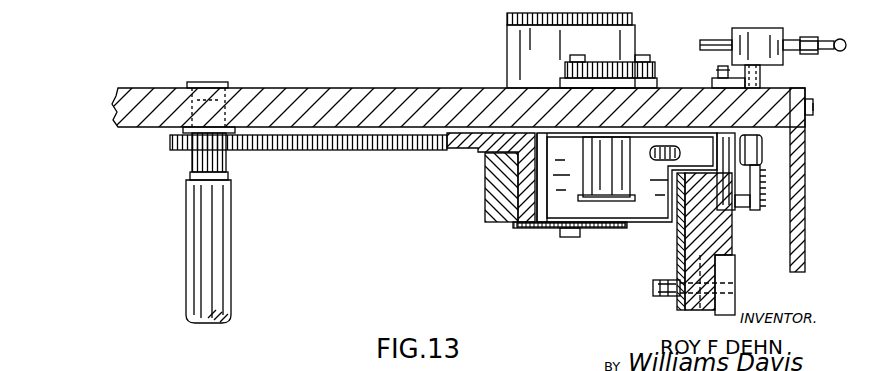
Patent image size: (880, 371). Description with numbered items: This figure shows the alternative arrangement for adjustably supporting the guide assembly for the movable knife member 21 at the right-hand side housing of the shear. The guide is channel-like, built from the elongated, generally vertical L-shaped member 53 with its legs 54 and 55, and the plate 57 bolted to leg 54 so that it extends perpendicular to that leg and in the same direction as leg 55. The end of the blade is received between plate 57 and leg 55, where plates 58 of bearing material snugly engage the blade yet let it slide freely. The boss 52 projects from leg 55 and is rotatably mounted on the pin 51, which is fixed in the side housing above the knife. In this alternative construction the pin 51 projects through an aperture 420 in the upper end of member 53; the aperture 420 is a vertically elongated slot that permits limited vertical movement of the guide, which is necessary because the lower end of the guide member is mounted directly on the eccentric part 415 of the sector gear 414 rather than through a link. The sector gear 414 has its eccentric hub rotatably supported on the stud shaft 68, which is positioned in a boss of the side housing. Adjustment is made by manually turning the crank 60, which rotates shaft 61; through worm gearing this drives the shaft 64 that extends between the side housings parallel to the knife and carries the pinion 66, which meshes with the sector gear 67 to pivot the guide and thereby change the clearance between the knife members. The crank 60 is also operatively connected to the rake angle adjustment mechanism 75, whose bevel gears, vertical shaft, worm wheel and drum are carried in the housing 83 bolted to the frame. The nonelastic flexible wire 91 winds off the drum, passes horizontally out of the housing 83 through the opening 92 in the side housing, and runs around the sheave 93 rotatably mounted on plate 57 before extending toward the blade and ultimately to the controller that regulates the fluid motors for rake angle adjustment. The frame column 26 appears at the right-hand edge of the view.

The movable knife member 21 is at (735, 268).
The frame column 26 is at (806, 216).
The pin 51 is at (598, 166).
The boss 52 is at (615, 185).
The L-shaped member 53 is at (672, 235).
The leg 54 is at (697, 130).
The leg 55 is at (645, 228).
The plate 57 is at (740, 205).
The plate 58 is at (745, 218).
The crank 60 is at (842, 51).
The shaft 61 is at (712, 42).
The shaft 64 is at (196, 209).
The pinion 66 is at (191, 153).
The sector gear 67 is at (303, 150).
The stud shaft 68 is at (508, 30).
The rake angle adjustment mechanism 75 is at (795, 28).
The housing 83 is at (762, 30).
The flexible wire 91 is at (762, 75).
The opening 92 is at (680, 108).
The sheave 93 is at (760, 170).
The sector gear 414 is at (446, 150).
The eccentric part 415 is at (515, 190).
The aperture 420 is at (628, 165).